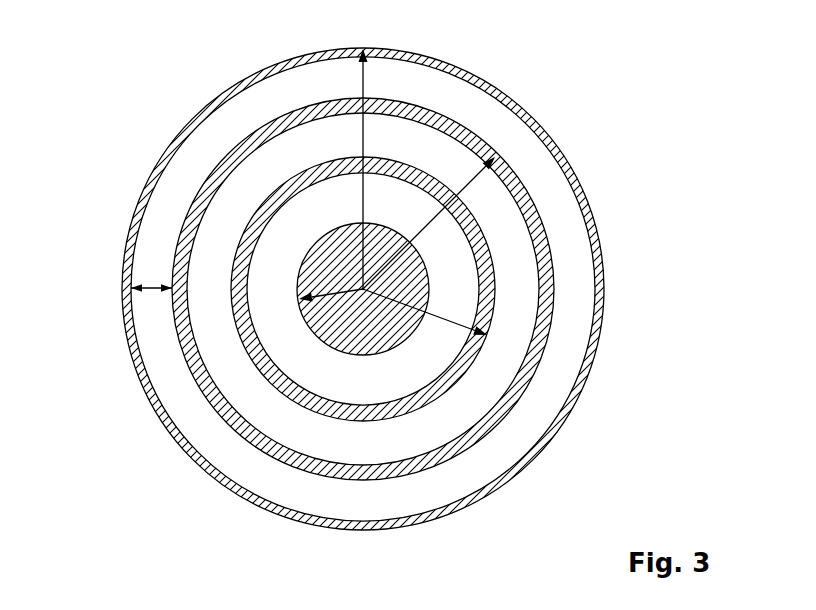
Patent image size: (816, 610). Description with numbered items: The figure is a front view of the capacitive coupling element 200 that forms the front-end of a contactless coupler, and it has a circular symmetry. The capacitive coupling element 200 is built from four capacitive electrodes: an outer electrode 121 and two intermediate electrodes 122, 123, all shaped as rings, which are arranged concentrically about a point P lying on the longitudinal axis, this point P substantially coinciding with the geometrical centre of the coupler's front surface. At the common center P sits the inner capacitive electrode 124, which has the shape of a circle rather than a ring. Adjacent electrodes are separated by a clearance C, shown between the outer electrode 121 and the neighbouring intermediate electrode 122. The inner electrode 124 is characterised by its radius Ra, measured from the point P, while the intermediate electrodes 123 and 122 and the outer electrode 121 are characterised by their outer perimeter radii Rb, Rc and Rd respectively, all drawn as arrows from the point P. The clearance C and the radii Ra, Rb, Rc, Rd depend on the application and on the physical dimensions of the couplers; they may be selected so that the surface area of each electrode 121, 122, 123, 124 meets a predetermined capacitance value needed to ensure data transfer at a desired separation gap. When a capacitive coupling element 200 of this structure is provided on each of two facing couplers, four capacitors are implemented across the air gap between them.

The capacitive coupling element 200 is at (100, 48).
The outer electrode 121 is at (603, 332).
The intermediate electrode 122 is at (540, 372).
The intermediate electrode 123 is at (450, 390).
The inner capacitive electrode 124 is at (300, 260).
The point P is at (353, 277).
The radius of the inner electrode Ra is at (330, 298).
The outer perimeter radius Rb is at (452, 322).
The outer perimeter radius Rc is at (480, 172).
The outer perimeter radius Rd is at (368, 83).
The clearance C is at (147, 290).